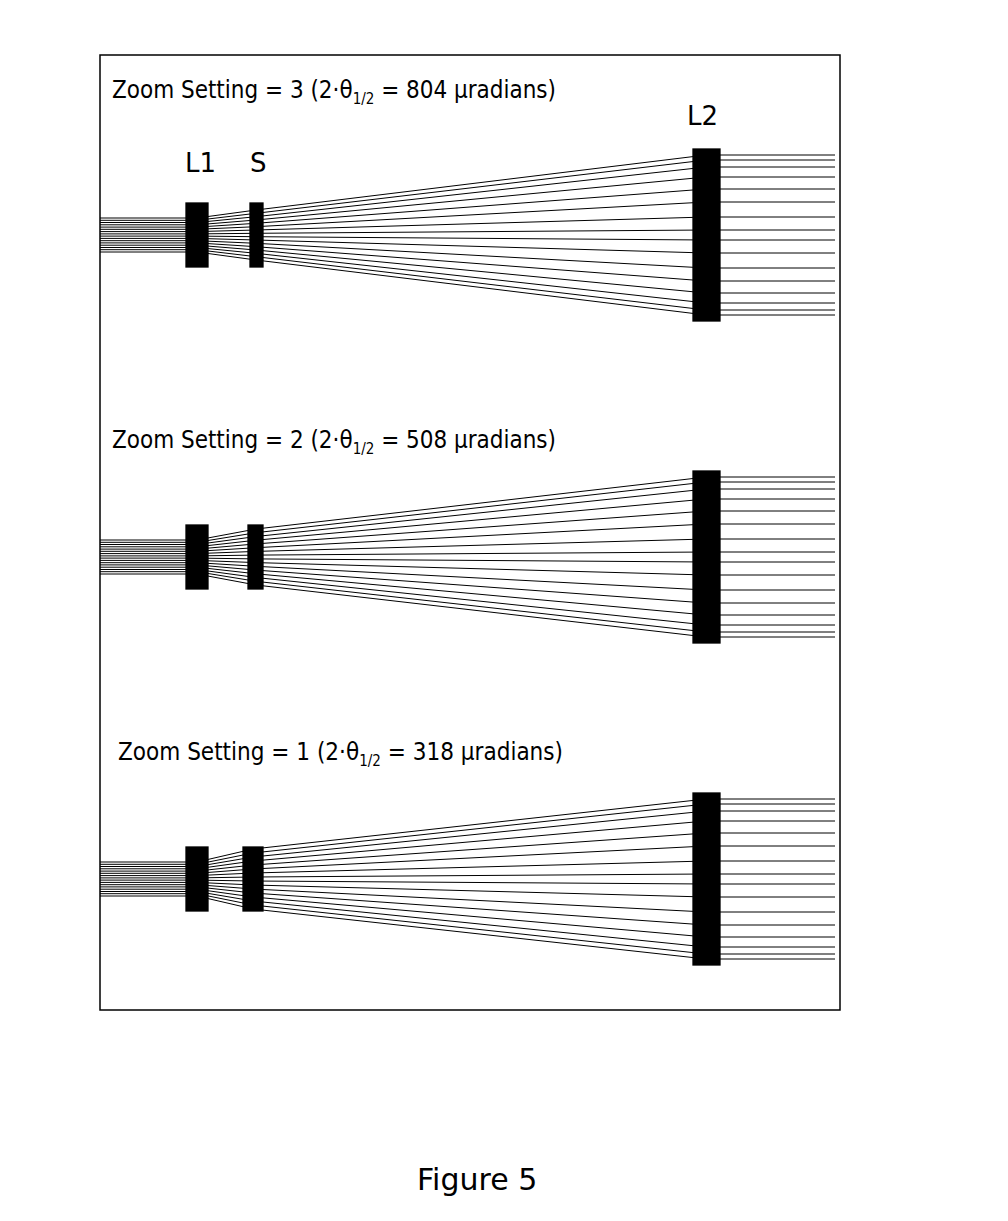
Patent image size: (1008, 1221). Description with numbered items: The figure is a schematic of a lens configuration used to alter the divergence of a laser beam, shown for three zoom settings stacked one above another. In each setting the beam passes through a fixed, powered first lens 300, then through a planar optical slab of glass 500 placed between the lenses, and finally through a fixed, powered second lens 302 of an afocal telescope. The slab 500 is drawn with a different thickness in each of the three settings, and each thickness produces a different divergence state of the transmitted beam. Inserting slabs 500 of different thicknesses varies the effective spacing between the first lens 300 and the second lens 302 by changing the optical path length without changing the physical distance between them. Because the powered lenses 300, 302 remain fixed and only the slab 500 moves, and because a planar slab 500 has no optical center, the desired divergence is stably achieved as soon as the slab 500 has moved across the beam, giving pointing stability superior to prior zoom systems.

The first lens 300 is at (187, 262).
The planar optical slab of glass 500 is at (260, 204).
The second lens 302 is at (718, 318).